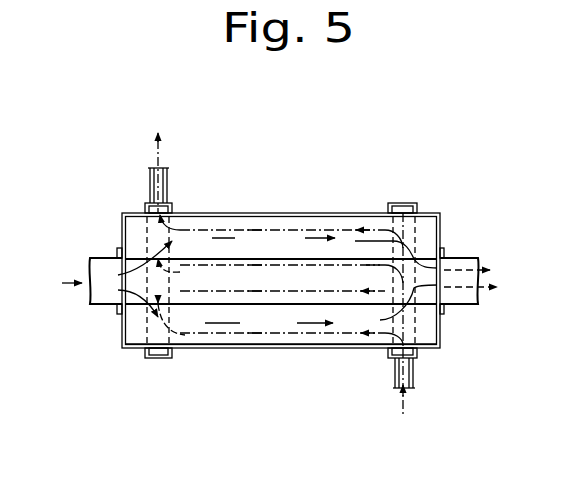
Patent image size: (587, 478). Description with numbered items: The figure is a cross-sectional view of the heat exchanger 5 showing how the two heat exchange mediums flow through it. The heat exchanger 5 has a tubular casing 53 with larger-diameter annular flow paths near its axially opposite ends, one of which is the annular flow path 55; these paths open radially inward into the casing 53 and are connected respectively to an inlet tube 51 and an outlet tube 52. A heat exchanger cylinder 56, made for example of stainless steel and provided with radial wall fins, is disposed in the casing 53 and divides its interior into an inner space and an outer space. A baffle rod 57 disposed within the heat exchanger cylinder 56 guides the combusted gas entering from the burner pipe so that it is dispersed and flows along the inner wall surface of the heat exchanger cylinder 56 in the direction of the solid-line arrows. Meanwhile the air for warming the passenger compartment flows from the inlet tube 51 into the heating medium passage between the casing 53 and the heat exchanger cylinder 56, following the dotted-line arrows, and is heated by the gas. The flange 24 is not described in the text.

The heat exchanger 5 is at (345, 169).
The cover flange 24 is at (407, 203).
The inlet tube 51 is at (413, 372).
The outlet tube 52 is at (167, 188).
The tubular casing 53 is at (275, 213).
The annular flow path 55 is at (158, 360).
The heat exchanger cylinder 56 is at (342, 348).
The baffle rod 57 is at (222, 297).